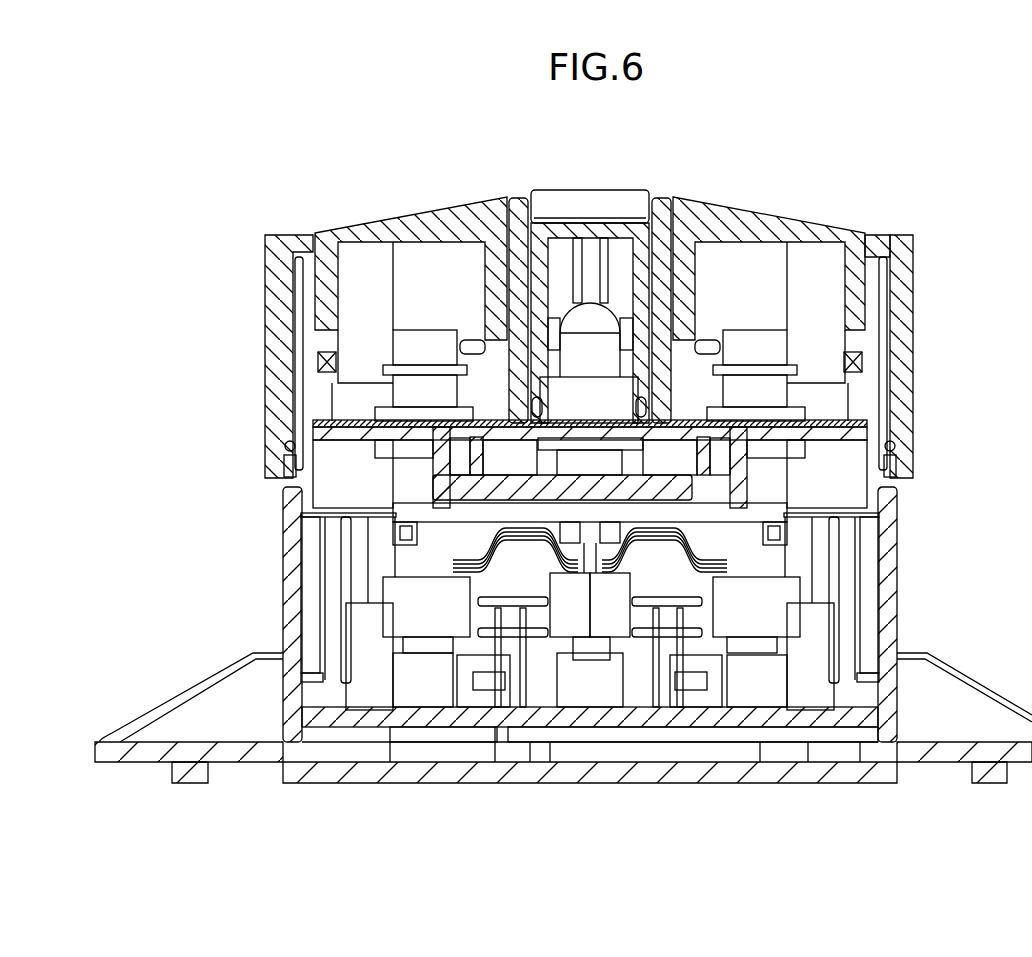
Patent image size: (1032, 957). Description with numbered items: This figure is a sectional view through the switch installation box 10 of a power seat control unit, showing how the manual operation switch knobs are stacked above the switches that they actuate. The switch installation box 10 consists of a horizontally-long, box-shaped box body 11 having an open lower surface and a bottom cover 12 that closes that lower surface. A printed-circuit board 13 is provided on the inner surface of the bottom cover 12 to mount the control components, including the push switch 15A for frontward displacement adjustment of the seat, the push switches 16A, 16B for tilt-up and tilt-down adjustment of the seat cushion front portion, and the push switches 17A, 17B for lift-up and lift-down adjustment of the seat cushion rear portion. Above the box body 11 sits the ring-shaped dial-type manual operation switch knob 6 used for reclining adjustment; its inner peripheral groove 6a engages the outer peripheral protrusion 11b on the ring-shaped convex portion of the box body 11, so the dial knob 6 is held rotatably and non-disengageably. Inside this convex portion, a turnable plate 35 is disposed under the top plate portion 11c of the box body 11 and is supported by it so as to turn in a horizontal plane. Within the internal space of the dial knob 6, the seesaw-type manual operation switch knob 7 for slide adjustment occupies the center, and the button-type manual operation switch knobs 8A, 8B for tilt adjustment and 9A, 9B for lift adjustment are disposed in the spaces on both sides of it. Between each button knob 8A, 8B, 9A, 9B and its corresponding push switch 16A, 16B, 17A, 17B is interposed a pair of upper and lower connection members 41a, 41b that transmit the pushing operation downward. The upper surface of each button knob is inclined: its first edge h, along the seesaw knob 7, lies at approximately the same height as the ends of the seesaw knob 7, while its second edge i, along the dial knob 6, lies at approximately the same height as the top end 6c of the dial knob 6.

The dial-type manual operation switch knob 6 is at (913, 290).
The inner peripheral groove 6a is at (288, 462).
The top end of the dial-type manual operation switch knob 6c is at (882, 236).
The seesaw-type manual operation switch knob 7 is at (586, 215).
The button-type manual operation switch knob 8A is at (408, 220).
The button-type manual operation switch knob 9A is at (401, 375).
The button-type manual operation switch knob 8B is at (768, 218).
The button-type manual operation switch knob 9B is at (778, 375).
The first edge h is at (507, 240).
The second edge i is at (317, 233).
The switch installation box 10 is at (563, 683).
The box body 11 is at (897, 578).
The outer peripheral protrusion 11b is at (290, 446).
The top plate portion 11c is at (830, 432).
The bottom cover 12 is at (700, 772).
The printed-circuit board 13 is at (648, 718).
The push switch 15A is at (587, 690).
The push switch 16A is at (451, 766).
The push switch 17A is at (483, 681).
The push switch 16B is at (753, 767).
The push switch 17B is at (696, 681).
The turnable plate 35 is at (517, 493).
The upper connection member 41a is at (420, 313).
The lower connection member 41b is at (788, 588).